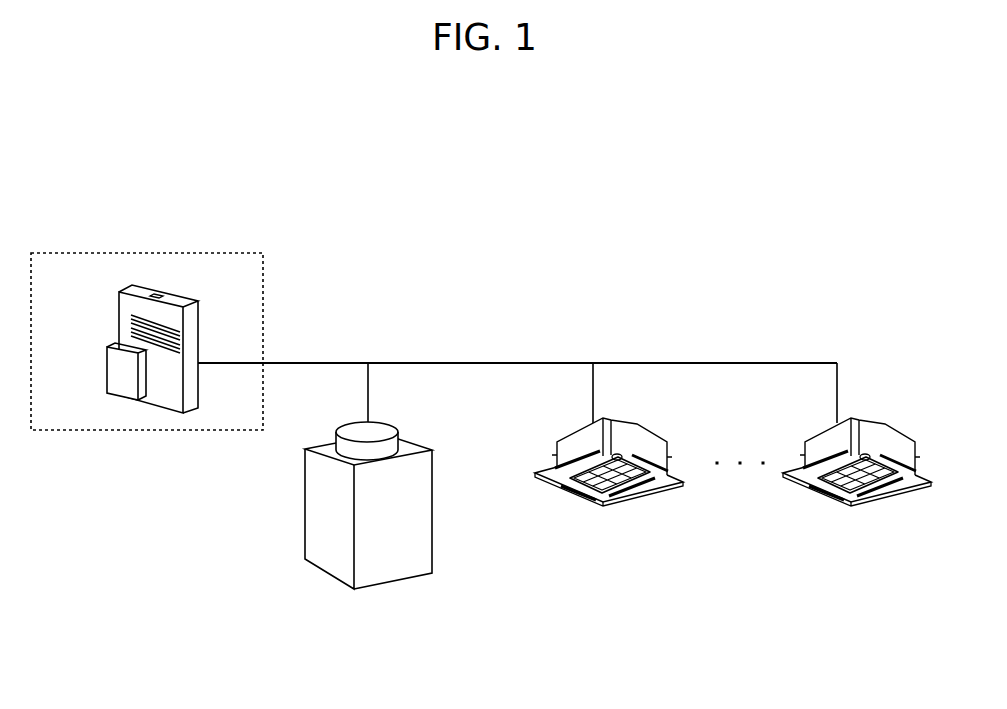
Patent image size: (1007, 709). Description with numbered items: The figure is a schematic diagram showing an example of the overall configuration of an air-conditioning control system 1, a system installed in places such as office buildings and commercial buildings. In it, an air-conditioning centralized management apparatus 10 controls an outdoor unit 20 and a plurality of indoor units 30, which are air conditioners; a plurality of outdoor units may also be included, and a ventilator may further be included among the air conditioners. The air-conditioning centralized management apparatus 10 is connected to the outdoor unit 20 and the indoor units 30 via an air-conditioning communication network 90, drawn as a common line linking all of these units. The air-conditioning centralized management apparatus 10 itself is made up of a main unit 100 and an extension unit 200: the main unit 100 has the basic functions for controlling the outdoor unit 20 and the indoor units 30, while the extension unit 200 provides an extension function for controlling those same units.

The air-conditioning control system 1 is at (754, 262).
The air-conditioning centralized management apparatus 10 is at (226, 253).
The main unit 100 is at (190, 328).
The extension unit 200 is at (120, 365).
The outdoor unit 20 is at (408, 440).
The indoor unit 30 is at (658, 435).
The air-conditioning communication network 90 is at (565, 362).